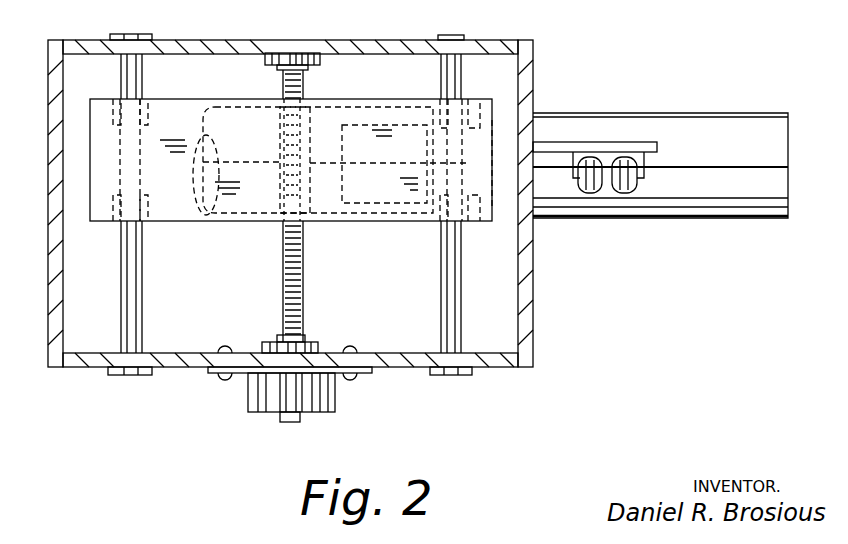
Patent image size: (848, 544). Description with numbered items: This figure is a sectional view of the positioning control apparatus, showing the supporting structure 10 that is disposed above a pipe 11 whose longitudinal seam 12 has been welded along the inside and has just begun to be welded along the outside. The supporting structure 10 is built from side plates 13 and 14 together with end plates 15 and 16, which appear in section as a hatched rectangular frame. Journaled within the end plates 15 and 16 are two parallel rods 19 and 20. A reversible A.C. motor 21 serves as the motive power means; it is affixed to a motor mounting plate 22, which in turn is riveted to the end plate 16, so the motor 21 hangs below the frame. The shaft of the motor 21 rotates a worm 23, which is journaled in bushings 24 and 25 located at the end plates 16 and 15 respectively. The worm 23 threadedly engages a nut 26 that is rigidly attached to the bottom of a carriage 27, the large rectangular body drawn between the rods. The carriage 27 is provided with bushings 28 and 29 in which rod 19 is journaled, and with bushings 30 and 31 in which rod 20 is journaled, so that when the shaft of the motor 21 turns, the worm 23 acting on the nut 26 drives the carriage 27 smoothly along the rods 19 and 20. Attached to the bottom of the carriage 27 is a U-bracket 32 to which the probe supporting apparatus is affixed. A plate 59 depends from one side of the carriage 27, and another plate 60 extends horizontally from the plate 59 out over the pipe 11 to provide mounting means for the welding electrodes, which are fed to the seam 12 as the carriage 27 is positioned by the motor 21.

The supporting structure 10 is at (399, 38).
The pipe 11 is at (666, 114).
The longitudinal seam 12 is at (713, 168).
The side plate 13 is at (530, 258).
The side plate 14 is at (54, 256).
The end plate 15 is at (322, 50).
The end plate 16 is at (182, 370).
The rod 19 is at (143, 83).
The rod 20 is at (440, 258).
The reversible A.C. motor 21 is at (265, 410).
The motor mounting plate 22 is at (237, 375).
The worm 23 is at (306, 268).
The bushing 24 is at (318, 346).
The bushing 25 is at (317, 67).
The nut 26 is at (266, 146).
The carriage 27 is at (100, 99).
The bushing 28 is at (148, 207).
The bushing 29 is at (148, 113).
The bushing 30 is at (477, 97).
The bushing 31 is at (474, 222).
The U-bracket 32 is at (342, 197).
The plate 59 is at (489, 132).
The plate 60 is at (562, 150).